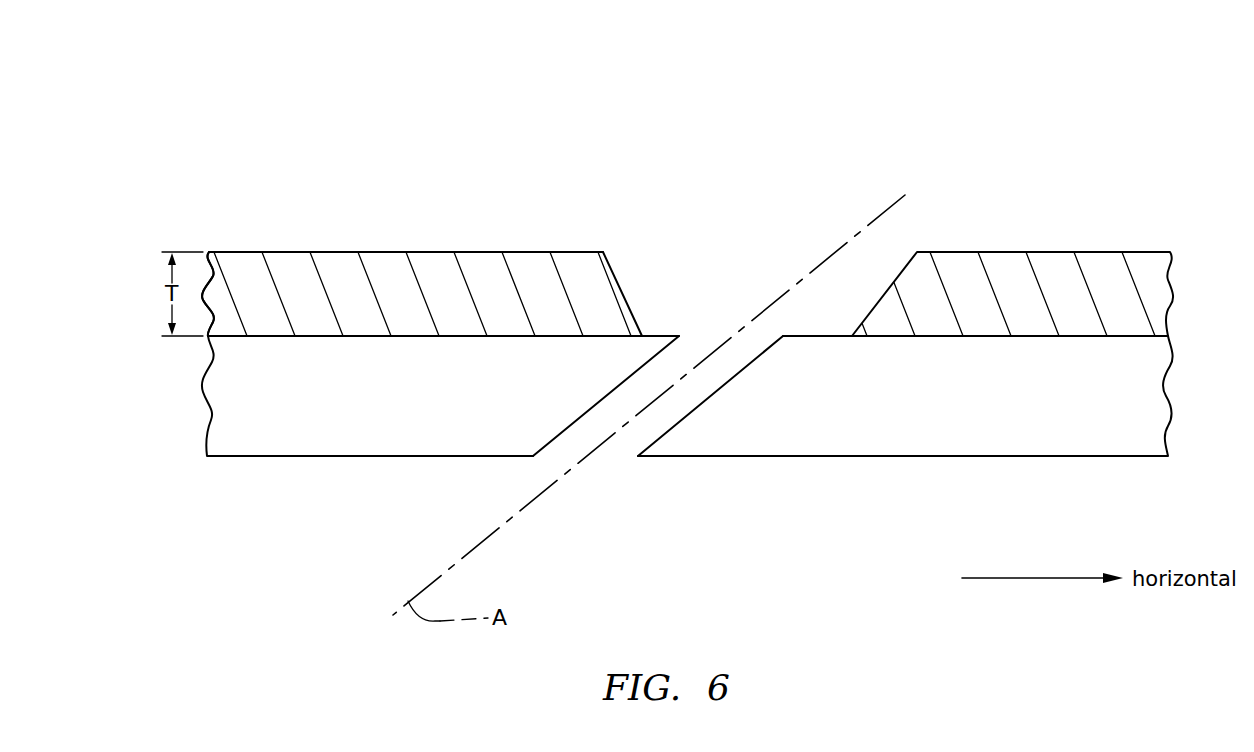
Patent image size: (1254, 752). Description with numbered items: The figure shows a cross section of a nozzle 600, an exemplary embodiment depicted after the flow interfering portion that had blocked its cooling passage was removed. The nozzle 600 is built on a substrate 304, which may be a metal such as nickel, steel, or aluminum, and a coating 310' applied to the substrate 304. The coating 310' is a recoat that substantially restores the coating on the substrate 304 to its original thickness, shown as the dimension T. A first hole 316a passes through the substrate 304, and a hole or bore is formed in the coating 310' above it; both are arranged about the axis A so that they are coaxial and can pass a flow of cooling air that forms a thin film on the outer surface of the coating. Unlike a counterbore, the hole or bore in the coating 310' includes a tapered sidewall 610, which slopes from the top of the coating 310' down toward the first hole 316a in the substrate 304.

The nozzle 600 is at (687, 284).
The coating 310' is at (687, 267).
The tapered sidewall 610 is at (623, 296).
The first hole 316a is at (563, 445).
The substrate 304 is at (687, 389).